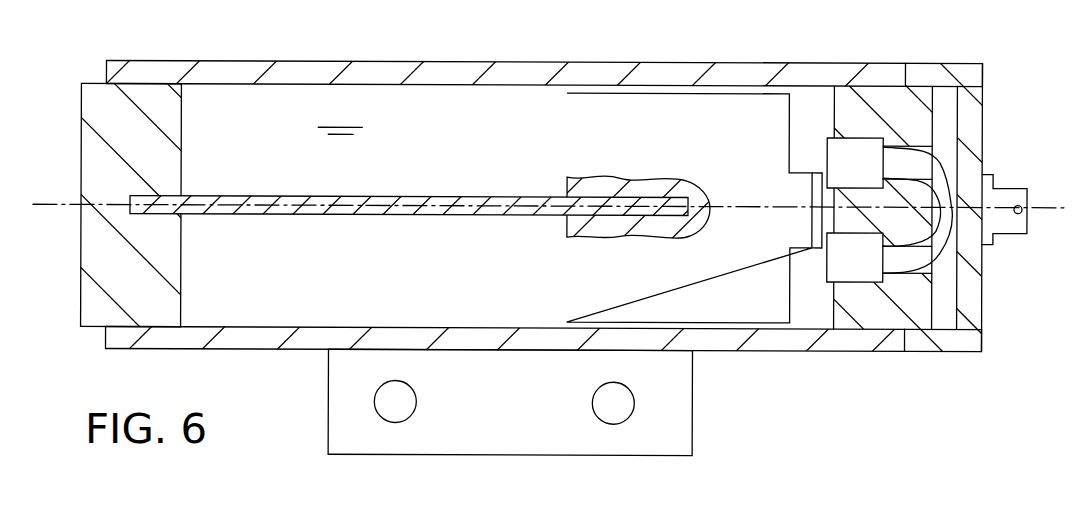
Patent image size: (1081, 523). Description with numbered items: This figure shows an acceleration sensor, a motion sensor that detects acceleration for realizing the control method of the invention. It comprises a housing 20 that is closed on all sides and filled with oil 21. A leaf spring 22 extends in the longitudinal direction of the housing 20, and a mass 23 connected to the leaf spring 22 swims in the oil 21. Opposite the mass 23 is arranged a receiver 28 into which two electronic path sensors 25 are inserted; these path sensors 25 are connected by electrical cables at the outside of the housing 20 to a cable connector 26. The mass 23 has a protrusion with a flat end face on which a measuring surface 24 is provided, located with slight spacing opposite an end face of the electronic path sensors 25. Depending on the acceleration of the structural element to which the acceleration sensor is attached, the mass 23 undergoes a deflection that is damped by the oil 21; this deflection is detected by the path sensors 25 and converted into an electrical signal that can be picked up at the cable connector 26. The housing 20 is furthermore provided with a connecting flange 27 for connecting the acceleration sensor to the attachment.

The housing 20 is at (214, 62).
The oil 21 is at (335, 128).
The leaf spring 22 is at (392, 190).
The mass 23 is at (575, 127).
The measuring surface 24 is at (811, 183).
The electronic path sensors 25 is at (867, 170).
The cable connector 26 is at (1012, 224).
The connecting flange 27 is at (678, 423).
The receiver 28 is at (892, 312).